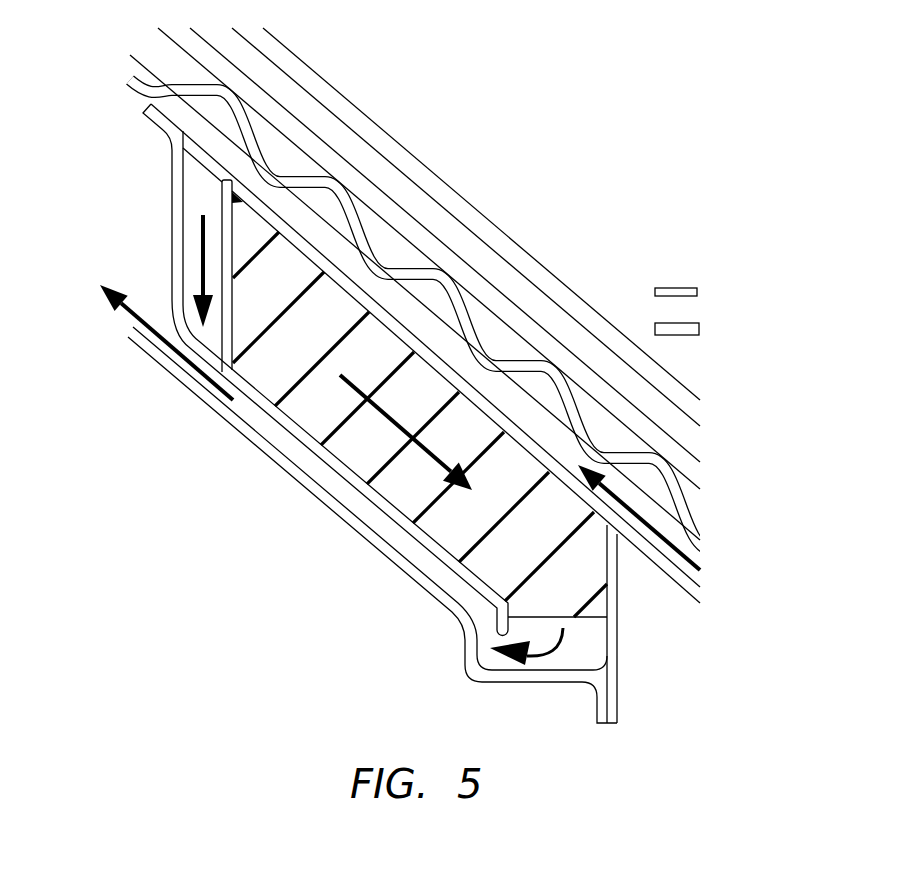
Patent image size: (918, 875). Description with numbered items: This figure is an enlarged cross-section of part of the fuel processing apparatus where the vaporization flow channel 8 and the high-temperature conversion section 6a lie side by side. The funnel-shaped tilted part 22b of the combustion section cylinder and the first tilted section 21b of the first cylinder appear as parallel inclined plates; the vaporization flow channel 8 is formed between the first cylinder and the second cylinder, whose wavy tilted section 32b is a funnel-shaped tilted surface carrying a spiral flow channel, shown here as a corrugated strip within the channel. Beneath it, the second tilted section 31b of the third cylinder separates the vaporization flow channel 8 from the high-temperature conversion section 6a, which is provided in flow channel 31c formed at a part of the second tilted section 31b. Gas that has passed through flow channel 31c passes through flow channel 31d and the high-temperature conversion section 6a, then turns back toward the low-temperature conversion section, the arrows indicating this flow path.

The flow channel 31c is at (313, 237).
The vaporization flow channel 8 is at (392, 253).
The wavy tilted section 32b is at (465, 317).
The first tilted section 21b is at (538, 322).
The tilted part 22b is at (597, 325).
The flow channel 31d is at (172, 200).
The high-temperature conversion section 6a is at (298, 413).
The second tilted section 31b is at (676, 587).